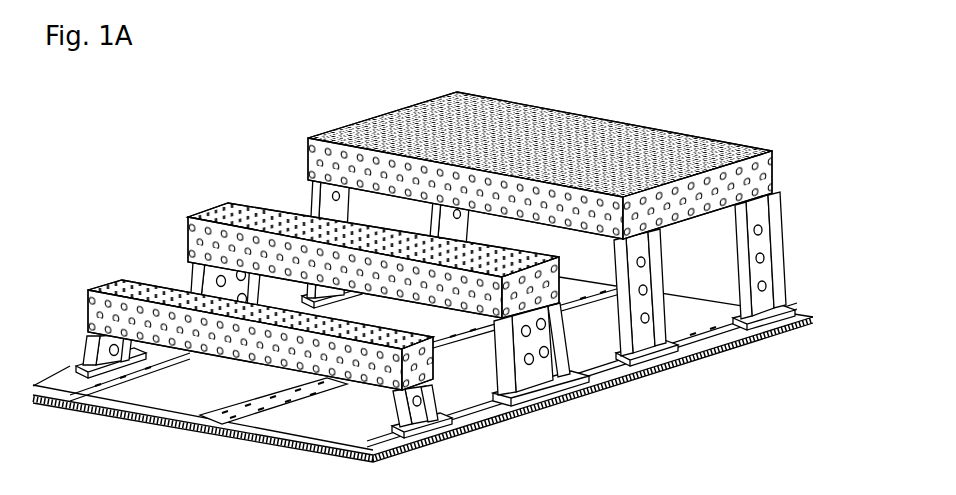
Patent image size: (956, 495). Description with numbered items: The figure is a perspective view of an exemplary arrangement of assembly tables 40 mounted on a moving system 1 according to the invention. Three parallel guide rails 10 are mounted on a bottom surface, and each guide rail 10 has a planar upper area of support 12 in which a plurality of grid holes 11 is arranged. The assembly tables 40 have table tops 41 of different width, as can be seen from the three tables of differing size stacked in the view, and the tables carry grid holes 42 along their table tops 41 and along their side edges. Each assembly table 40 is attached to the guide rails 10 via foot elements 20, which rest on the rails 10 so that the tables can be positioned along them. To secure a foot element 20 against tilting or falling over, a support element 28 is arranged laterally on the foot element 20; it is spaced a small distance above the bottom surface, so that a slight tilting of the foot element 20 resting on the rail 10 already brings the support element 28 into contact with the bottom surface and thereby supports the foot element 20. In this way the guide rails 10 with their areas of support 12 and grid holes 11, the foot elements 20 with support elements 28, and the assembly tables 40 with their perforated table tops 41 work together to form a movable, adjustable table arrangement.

The table system 1 is at (83, 476).
The guide rail 10 is at (175, 358).
The grid holes 11 is at (465, 340).
The upper area of support 12 is at (247, 403).
The foot element 20 is at (311, 183).
The support element 28 is at (450, 428).
The assembly table 40 is at (416, 212).
The table top 41 is at (623, 118).
The grid holes 42 is at (530, 280).